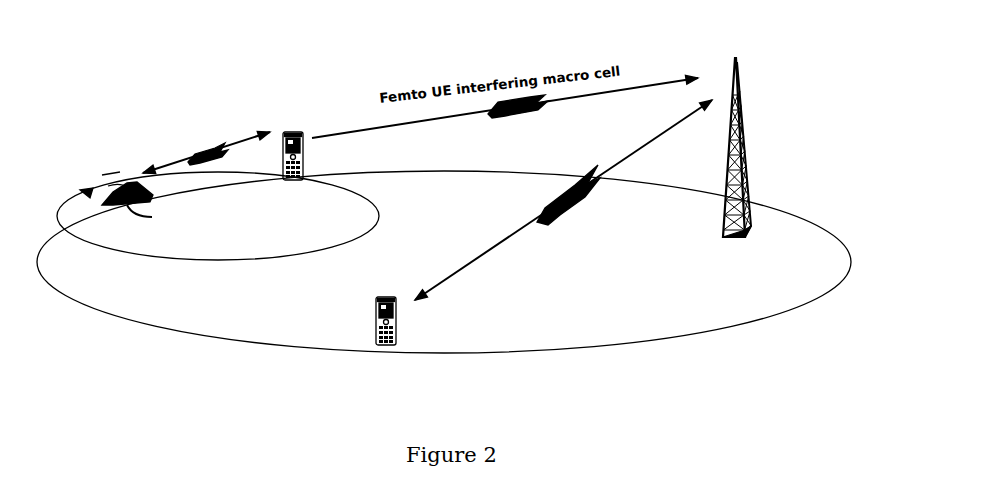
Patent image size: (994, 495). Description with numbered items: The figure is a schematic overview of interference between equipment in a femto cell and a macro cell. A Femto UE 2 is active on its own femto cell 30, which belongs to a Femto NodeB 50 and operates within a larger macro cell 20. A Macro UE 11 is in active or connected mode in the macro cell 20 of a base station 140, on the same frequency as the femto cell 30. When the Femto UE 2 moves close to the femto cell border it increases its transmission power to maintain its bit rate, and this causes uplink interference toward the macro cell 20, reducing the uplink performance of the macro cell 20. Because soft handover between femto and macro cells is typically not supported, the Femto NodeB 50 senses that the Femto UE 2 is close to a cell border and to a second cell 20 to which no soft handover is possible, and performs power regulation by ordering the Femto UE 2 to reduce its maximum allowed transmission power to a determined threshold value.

The Femto UE 2 is at (300, 133).
The Macro UE 11 is at (375, 323).
The macro cell 20 is at (647, 310).
The femto cell 30 is at (231, 231).
The Femto NodeB 50 is at (116, 178).
The base station 140 is at (712, 193).